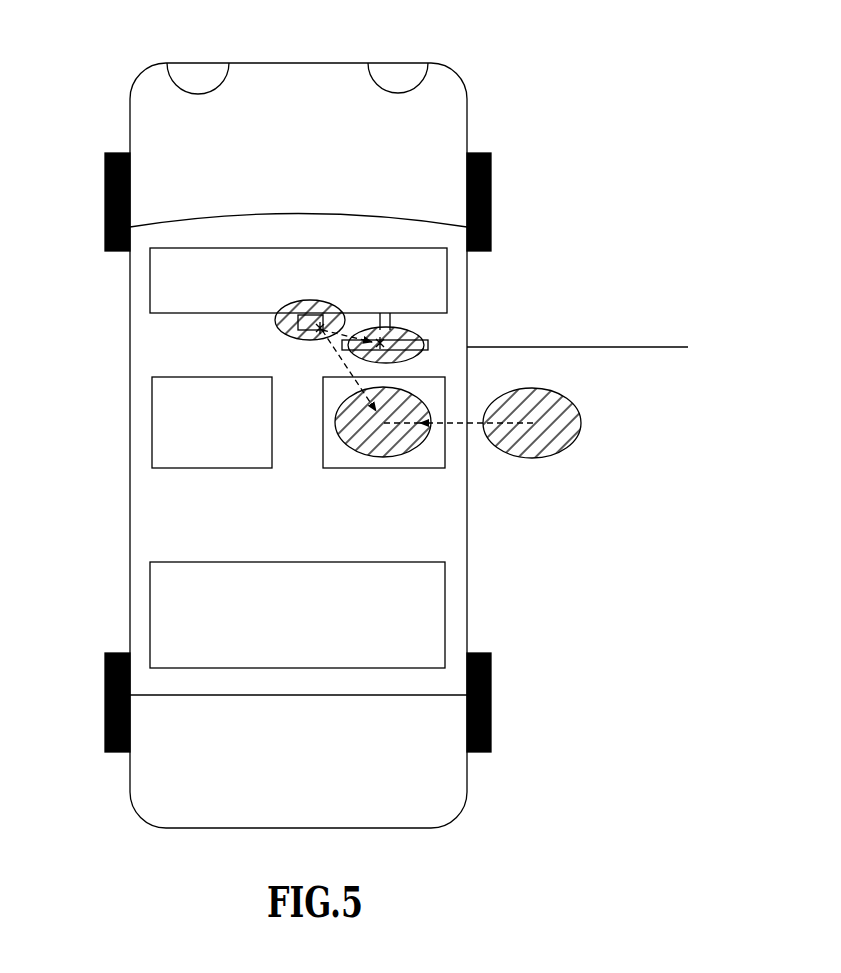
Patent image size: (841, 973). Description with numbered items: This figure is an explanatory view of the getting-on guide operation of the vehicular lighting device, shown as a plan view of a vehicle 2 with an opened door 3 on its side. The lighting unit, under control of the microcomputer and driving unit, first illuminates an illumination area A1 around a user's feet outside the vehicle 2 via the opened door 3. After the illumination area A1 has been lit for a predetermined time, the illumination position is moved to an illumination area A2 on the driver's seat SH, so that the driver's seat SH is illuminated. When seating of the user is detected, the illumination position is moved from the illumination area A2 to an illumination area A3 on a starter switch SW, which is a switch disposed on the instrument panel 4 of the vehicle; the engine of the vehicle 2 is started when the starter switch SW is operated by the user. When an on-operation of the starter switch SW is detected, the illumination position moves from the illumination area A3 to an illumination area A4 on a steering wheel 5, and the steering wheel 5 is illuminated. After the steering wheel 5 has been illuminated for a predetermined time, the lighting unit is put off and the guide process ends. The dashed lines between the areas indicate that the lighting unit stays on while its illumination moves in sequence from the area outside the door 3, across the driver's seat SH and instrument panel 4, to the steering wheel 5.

The vehicle 2 is at (460, 68).
The opened door 3 is at (592, 345).
The instrument panel 4 is at (152, 280).
The steering wheel 5 is at (430, 345).
The starter switch SW is at (293, 337).
The driver's seat SH is at (435, 468).
The illumination area A1 is at (583, 423).
The illumination area A2 is at (390, 457).
The illumination area A3 is at (318, 300).
The illumination area A4 is at (403, 330).